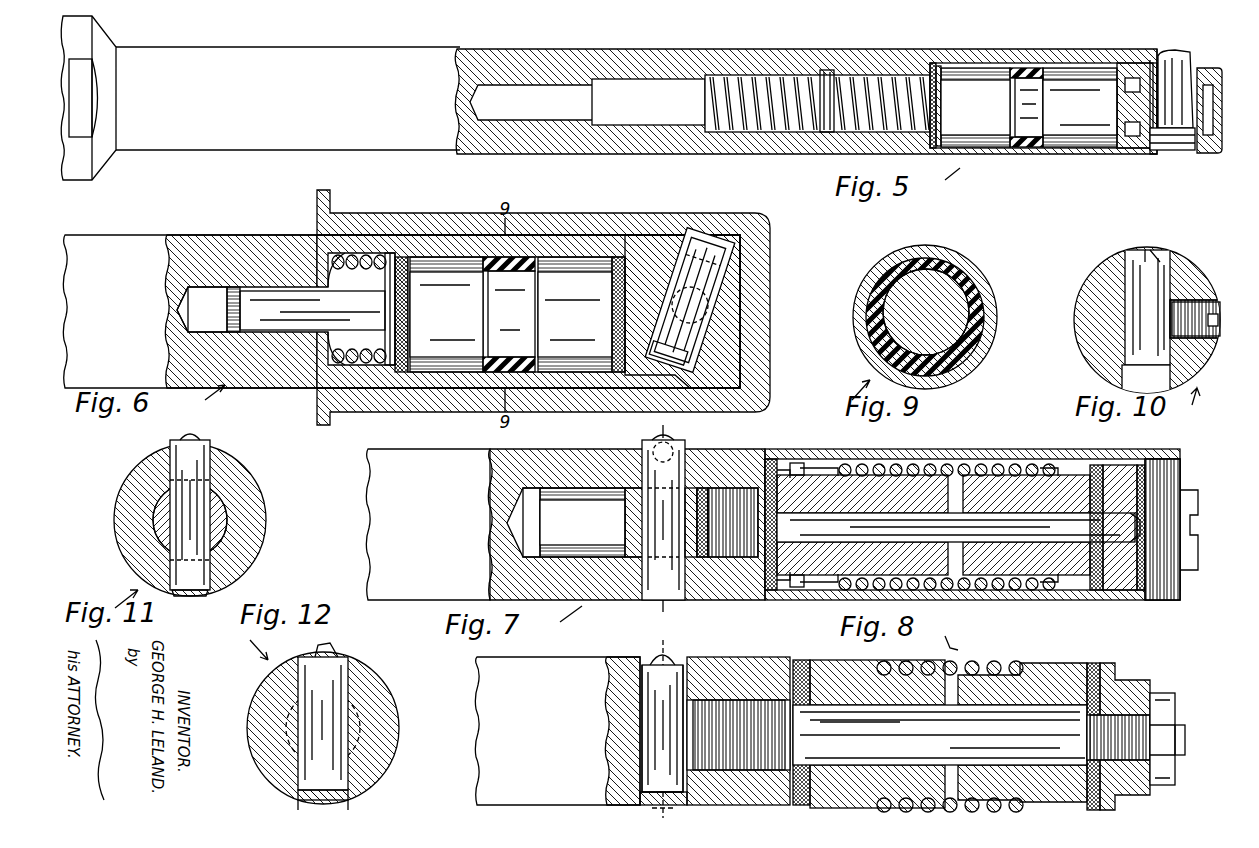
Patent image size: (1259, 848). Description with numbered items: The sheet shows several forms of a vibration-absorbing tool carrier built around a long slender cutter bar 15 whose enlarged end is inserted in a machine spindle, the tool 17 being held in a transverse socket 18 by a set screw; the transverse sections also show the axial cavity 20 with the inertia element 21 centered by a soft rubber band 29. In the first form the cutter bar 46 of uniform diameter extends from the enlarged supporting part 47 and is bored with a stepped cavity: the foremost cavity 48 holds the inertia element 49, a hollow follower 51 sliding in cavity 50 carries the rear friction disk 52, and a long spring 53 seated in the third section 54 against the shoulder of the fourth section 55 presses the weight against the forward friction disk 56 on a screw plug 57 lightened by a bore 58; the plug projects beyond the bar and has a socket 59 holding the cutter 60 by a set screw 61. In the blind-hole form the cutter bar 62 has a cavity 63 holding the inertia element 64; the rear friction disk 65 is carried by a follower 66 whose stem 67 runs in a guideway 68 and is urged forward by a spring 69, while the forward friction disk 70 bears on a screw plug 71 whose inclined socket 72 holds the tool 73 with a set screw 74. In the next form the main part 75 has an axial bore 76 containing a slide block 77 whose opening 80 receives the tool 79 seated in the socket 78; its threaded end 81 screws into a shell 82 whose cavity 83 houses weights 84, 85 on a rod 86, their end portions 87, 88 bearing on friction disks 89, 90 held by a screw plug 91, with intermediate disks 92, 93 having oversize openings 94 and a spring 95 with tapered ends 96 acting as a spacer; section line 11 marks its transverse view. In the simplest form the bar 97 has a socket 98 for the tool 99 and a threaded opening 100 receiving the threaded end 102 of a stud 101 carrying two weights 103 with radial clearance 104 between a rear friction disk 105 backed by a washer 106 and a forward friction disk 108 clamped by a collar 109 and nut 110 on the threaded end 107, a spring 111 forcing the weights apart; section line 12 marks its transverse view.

In FIG. 5, the cutter bar 46 is at (422, 140).
In FIG. 5, the enlarged supporting part 47 is at (103, 145).
In FIG. 5, the foremost cavity 48 is at (990, 155).
In FIG. 5, the inertia element 49 is at (1029, 107).
In FIG. 5, the cavity 50 is at (827, 132).
In FIG. 5, the follower 51 is at (934, 68).
In FIG. 5, the rear friction disk 52 is at (940, 75).
In FIG. 5, the spring 53 is at (850, 132).
In FIG. 5, the third cavity section 54 is at (742, 132).
In FIG. 5, the fourth cavity section 55 is at (648, 102).
In FIG. 5, the forward friction disk 56 is at (1118, 155).
In FIG. 5, the screw plug 57 is at (1155, 155).
In FIG. 5, the bore 58 is at (1132, 80).
In FIG. 5, the socket 59 is at (1185, 150).
In FIG. 5, the cutter 60 is at (1188, 62).
In FIG. 5, the set screw 61 is at (1220, 100).
In FIG. 6, the cutter bar 62 is at (205, 250).
In FIG. 6, the cavity 63 is at (567, 365).
In FIG. 6, the inertia element 64 is at (560, 290).
In FIG. 6, the rear friction disk 65 is at (416, 335).
In FIG. 6, the follower 66 is at (392, 372).
In FIG. 6, the stem 67 is at (272, 300).
In FIG. 6, the guideway 68 is at (202, 309).
In FIG. 6, the spring 69 is at (340, 352).
In FIG. 6, the forward friction disk 70 is at (612, 292).
In FIG. 6, the screw plug 71 is at (645, 262).
In FIG. 6, the inclined socket 72 is at (705, 362).
In FIG. 6, the tool 73 is at (705, 275).
In FIG. 6, the set screw 74 is at (745, 310).
In FIG. 6, the axial cavity 20 is at (460, 372).
In FIG. 9, the axial cavity 20 is at (980, 345).
In FIG. 6, the inertia element 21 is at (511, 314).
In FIG. 9, the inertia element 21 is at (945, 300).
In FIG. 6, the rubber band 29 is at (520, 258).
In FIG. 9, the rubber band 29 is at (975, 305).
In FIG. 9, the cutter bar 15 is at (962, 257).
In FIG. 10, the cutter bar 15 is at (1178, 262).
In FIG. 10, the tool 17 is at (1140, 255).
In FIG. 10, the transverse socket 18 is at (1146, 380).
In FIG. 11, the main part of cutter bar 75 is at (245, 518).
In FIG. 7, the main part of cutter bar 75 is at (385, 480).
In FIG. 7, the axial bore 76 is at (520, 526).
In FIG. 11, the slide block 77 is at (212, 500).
In FIG. 7, the slide block 77 is at (562, 500).
In FIG. 7, the socket 78 is at (690, 482).
In FIG. 11, the tool 79 is at (205, 442).
In FIG. 7, the tool 79 is at (655, 445).
In FIG. 7, the transverse opening 80 is at (574, 522).
In FIG. 7, the screw threaded end 81 is at (728, 488).
In FIG. 7, the shell 82 is at (785, 585).
In FIG. 7, the cavity 83 is at (838, 590).
In FIG. 7, the rear weight 84 is at (835, 472).
In FIG. 7, the forward weight 85 is at (1078, 485).
In FIG. 7, the rod 86 is at (1125, 528).
In FIG. 7, the end portion of rear weight 87 is at (792, 480).
In FIG. 7, the end portion of forward weight 88 is at (1124, 478).
In FIG. 7, the rear friction disk 89 is at (770, 470).
In FIG. 7, the front friction disk 90 is at (1152, 598).
In FIG. 7, the screw plug 91 is at (1160, 492).
In FIG. 7, the intermediate friction disk 92 is at (1096, 592).
In FIG. 7, the intermediate friction disk 93 is at (798, 588).
In FIG. 7, the openings 94 is at (1135, 545).
In FIG. 7, the spring 95 is at (952, 465).
In FIG. 7, the tapered spring ends 96 is at (1040, 466).
In FIG. 7, the section line 11 is at (659, 519).
In FIG. 8, the section line 12 is at (662, 724).
In FIG. 12, the main part of cutter bar 97 is at (372, 705).
In FIG. 8, the main part of cutter bar 97 is at (557, 731).
In FIG. 12, the socket 98 is at (320, 795).
In FIG. 8, the socket 98 is at (685, 668).
In FIG. 12, the tool 99 is at (330, 685).
In FIG. 8, the tool 99 is at (660, 700).
In FIG. 8, the screw threaded axial opening 100 is at (720, 700).
In FIG. 8, the stud 101 is at (940, 735).
In FIG. 12, the threaded end 102 is at (300, 727).
In FIG. 8, the threaded end 102 is at (770, 748).
In FIG. 8, the weights 103 is at (870, 675).
In FIG. 8, the radial clearance 104 is at (890, 765).
In FIG. 8, the rear friction disk 105 is at (815, 680).
In FIG. 8, the metal washer 106 is at (800, 665).
In FIG. 8, the threaded reduced end 107 is at (1120, 715).
In FIG. 8, the forward friction disk 108 is at (1094, 680).
In FIG. 8, the collar 109 is at (1130, 797).
In FIG. 8, the nut 110 is at (1160, 695).
In FIG. 8, the spring 111 is at (978, 668).